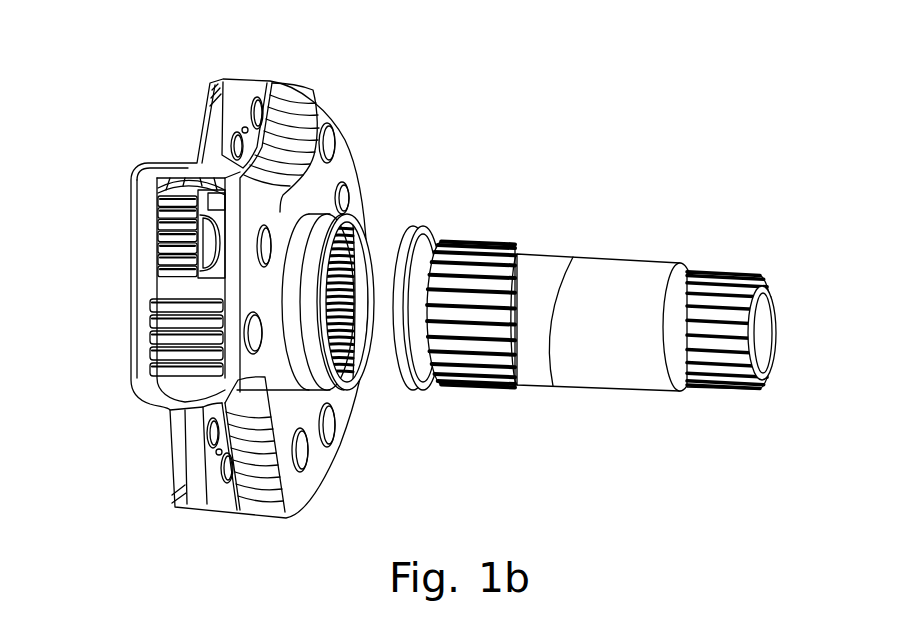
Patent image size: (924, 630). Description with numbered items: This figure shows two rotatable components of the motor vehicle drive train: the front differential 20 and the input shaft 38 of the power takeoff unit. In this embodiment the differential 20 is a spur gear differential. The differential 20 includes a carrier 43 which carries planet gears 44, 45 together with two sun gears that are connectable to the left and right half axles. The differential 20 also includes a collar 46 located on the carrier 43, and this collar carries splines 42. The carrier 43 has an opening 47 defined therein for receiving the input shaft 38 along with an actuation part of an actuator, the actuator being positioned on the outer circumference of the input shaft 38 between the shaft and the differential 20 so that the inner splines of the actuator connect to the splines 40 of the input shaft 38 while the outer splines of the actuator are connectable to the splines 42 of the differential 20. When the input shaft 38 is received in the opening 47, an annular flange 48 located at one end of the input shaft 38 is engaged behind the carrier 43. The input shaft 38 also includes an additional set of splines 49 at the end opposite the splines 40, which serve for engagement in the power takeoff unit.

The front differential 20 is at (242, 268).
The input shaft 38 is at (605, 335).
The splines 40 is at (493, 390).
The splines 42 is at (363, 343).
The carrier 43 is at (343, 152).
The planet gear 44 is at (150, 230).
The planet gear 45 is at (147, 340).
The collar 46 is at (387, 295).
The opening 47 is at (340, 358).
The annular flange 48 is at (420, 232).
The splines 49 is at (717, 390).